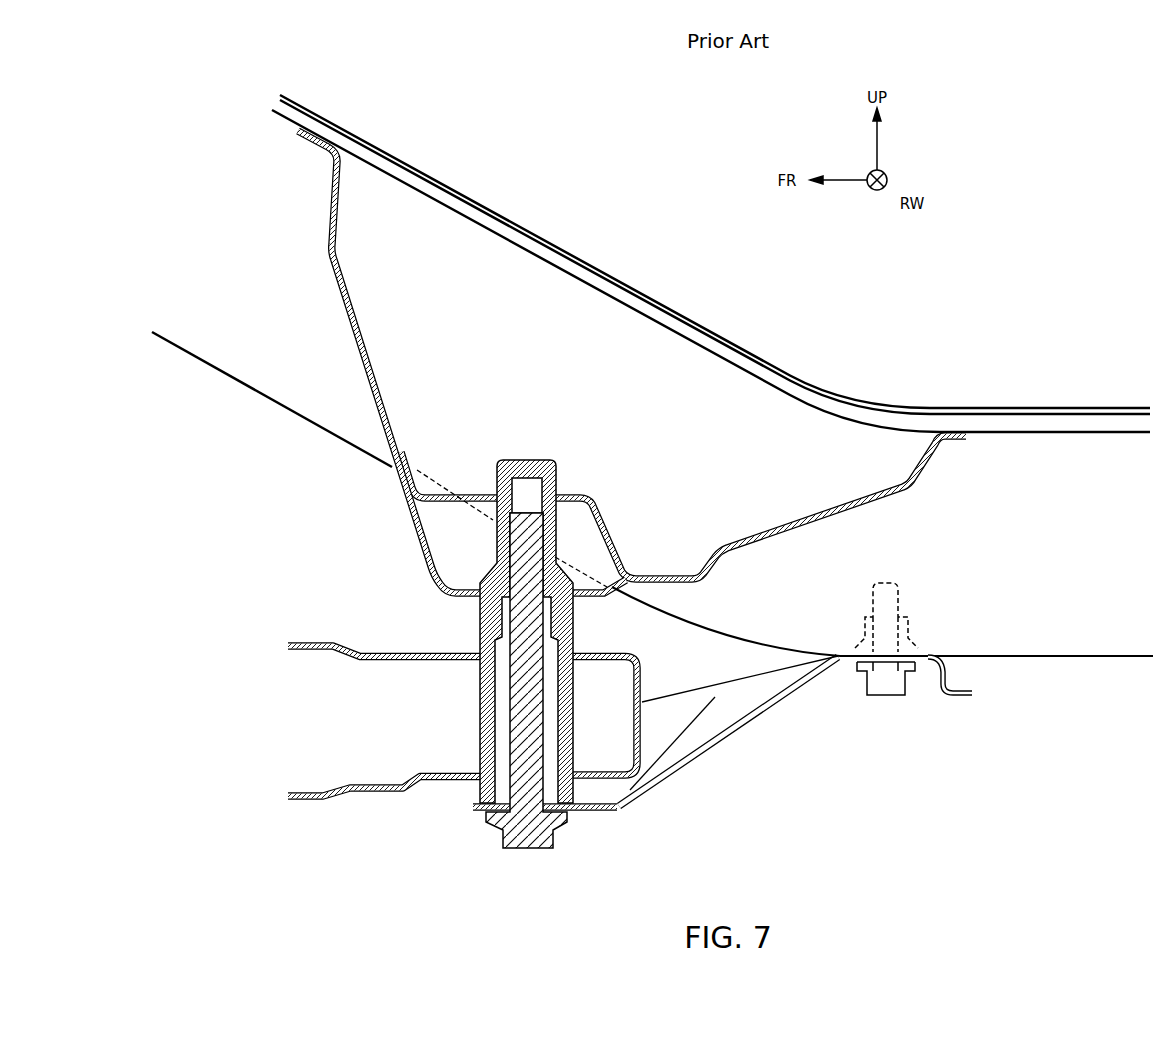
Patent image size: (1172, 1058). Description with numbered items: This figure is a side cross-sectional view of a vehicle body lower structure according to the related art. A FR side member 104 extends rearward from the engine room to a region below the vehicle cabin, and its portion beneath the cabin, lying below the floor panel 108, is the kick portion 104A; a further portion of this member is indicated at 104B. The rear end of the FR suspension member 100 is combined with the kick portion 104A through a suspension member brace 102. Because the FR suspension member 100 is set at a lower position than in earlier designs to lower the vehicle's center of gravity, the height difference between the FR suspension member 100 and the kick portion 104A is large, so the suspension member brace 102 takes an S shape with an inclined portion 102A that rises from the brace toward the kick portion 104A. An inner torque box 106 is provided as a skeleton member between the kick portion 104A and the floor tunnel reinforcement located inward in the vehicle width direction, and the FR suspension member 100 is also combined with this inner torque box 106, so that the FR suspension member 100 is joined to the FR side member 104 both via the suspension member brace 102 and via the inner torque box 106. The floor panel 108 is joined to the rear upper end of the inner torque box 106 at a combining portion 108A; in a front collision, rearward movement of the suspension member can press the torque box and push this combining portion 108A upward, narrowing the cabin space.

The FR suspension member 100 is at (318, 640).
The suspension member brace 102 is at (597, 815).
The inclined portion 102A is at (710, 752).
The FR side member 104 is at (272, 400).
The kick portion 104A is at (220, 372).
The roof side panel portion 104B is at (553, 270).
The inner torque box 106 is at (342, 299).
The floor panel 108 is at (432, 170).
The combining portion 108A is at (953, 408).